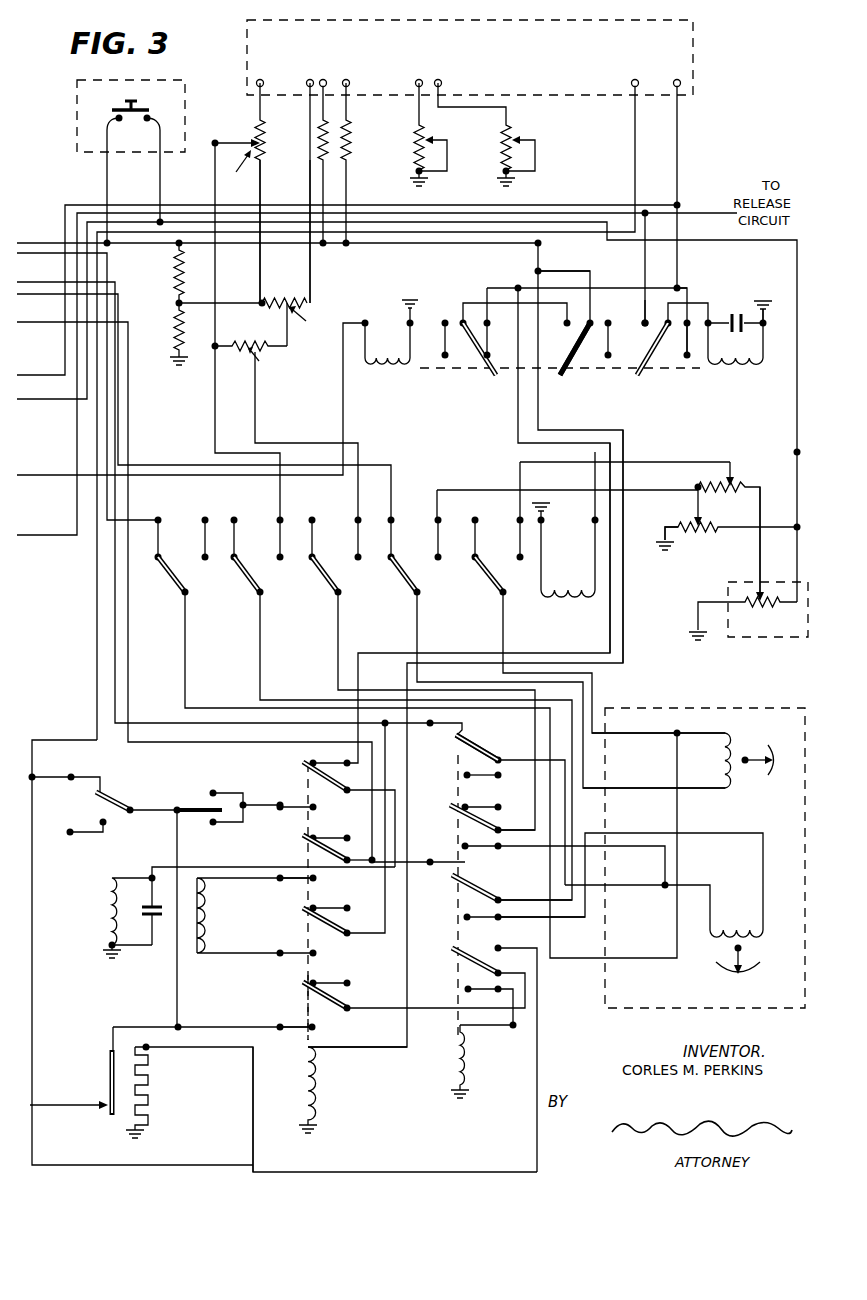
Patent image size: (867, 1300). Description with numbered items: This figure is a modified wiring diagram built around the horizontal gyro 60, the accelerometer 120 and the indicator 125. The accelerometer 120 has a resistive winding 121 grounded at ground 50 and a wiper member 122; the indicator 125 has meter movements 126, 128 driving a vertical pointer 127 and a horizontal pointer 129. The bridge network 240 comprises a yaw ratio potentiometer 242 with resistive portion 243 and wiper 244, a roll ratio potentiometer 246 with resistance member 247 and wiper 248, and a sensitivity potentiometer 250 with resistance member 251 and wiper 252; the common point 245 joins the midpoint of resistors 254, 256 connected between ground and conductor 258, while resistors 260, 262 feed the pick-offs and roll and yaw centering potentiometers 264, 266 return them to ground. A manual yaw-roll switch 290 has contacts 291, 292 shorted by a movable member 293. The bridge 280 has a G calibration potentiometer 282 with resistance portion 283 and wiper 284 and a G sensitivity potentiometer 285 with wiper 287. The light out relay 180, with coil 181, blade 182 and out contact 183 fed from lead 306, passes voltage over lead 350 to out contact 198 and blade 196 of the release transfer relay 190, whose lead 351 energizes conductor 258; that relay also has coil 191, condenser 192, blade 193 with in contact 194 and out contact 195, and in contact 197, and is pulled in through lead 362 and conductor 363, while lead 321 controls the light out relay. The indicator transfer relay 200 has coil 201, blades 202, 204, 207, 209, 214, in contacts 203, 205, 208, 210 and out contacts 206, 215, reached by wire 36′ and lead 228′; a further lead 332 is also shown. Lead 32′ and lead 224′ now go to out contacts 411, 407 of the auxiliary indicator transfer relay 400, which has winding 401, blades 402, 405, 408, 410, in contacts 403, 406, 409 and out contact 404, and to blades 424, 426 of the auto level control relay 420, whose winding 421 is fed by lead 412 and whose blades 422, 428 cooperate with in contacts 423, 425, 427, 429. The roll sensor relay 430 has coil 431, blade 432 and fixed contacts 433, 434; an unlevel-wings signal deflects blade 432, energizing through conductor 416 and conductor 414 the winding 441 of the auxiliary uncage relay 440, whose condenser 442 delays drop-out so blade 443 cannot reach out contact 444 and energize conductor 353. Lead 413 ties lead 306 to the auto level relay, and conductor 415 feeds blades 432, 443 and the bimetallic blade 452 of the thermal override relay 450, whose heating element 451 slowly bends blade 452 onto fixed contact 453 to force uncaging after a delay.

The horizontal gyro 60 is at (462, 63).
The manual yaw-roll switch 290 is at (113, 102).
The movable switch member 293 is at (136, 108).
The contact 292 is at (101, 179).
The contact 291 is at (163, 169).
The wiper 244 is at (252, 143).
The resistive portion 243 is at (261, 142).
The yaw ratio potentiometer 242 is at (238, 172).
The resistor 260 is at (310, 165).
The resistor 262 is at (346, 140).
The roll centering potentiometer 264 is at (436, 137).
The yaw centering potentiometer 266 is at (522, 136).
The ground 50 is at (175, 357).
The conductor 353 is at (97, 582).
The lead 306 is at (80, 205).
The lead 362 is at (130, 213).
The bridge network 240 is at (206, 194).
The conductor 258 is at (60, 243).
The wire 36′ is at (138, 518).
The lead 32′ is at (138, 724).
The lead 228′ is at (204, 407).
The lead 224′ is at (180, 743).
The lead 332 is at (409, 411).
The lead 321 is at (18, 476).
The resistor 254 is at (179, 286).
The resistor 256 is at (176, 327).
The common connection 245 is at (260, 296).
The resistance member 247 is at (310, 298).
The wiper 248 is at (286, 306).
The roll ratio potentiometer 246 is at (314, 316).
The resistance member 251 is at (250, 337).
The sensitivity adjustment potentiometer 250 is at (272, 357).
The wiper 252 is at (256, 411).
The light out relay 180 is at (410, 417).
The coil 181 is at (403, 358).
The movable contact blade 182 is at (478, 375).
The out contact 183 is at (487, 356).
The lead 350 is at (470, 299).
The lead 351 is at (572, 271).
The conductor 363 is at (698, 303).
The release transfer relay 190 is at (746, 441).
The coil 191 is at (740, 358).
The condenser 192 is at (736, 311).
The movable contact blade 193 is at (655, 375).
The in contact 194 is at (687, 358).
The out contact 195 is at (644, 331).
The movable contact blade 196 is at (579, 354).
The in contact 197 is at (608, 358).
The out contact 198 is at (562, 378).
The lead 412 is at (542, 430).
The lead 413 is at (518, 430).
The out contact 215 is at (158, 560).
The movable contact blade 214 is at (178, 582).
The movable contact blade 209 is at (246, 576).
The in contact 210 is at (280, 557).
The movable contact blade 207 is at (324, 576).
The in contact 208 is at (358, 557).
The out contact 206 is at (391, 557).
The in contact 205 is at (438, 557).
The movable contact blade 204 is at (400, 578).
The in contact 203 is at (520, 557).
The movable contact blade 202 is at (488, 578).
The coil 201 is at (543, 572).
The indicator transfer relay 200 is at (574, 642).
The bridge 280 is at (748, 557).
The wiper 287 is at (728, 473).
The G sensitivity potentiometer 285 is at (744, 485).
The wiper 284 is at (699, 506).
The G calibration potentiometer 282 is at (684, 521).
The resistance portion 283 is at (672, 531).
The wiper member 122 is at (771, 549).
The resistive winding 121 is at (752, 606).
The accelerometer 120 is at (779, 663).
The indicator 125 is at (690, 998).
The meter movement 128 is at (728, 734).
The pointer 129 is at (763, 768).
The meter movement 126 is at (742, 928).
The pointer 127 is at (742, 952).
The auxiliary indicator transfer relay 400 is at (508, 1077).
The winding 401 is at (466, 1046).
The movable switch blade 402 is at (455, 962).
The in contact 403 is at (462, 989).
The out contact 404 is at (460, 951).
The movable switch blade 405 is at (452, 876).
The in contact 406 is at (462, 917).
The out contact 407 is at (467, 881).
The movable switch blade 408 is at (452, 806).
The in contact 409 is at (462, 846).
The movable switch blade 410 is at (455, 741).
The out contact 411 is at (466, 741).
The roll sensor relay 430 is at (252, 949).
The coil 431 is at (197, 955).
The movable switch blade 428 is at (308, 766).
The in contact 429 is at (313, 807).
The movable switch blade 426 is at (316, 851).
The in contact 427 is at (313, 878).
The movable switch blade 424 is at (316, 926).
The in contact 425 is at (313, 953).
The movable switch blade 422 is at (308, 986).
The in contact 423 is at (313, 1027).
The conductor 414 is at (227, 868).
The conductor 415 is at (196, 1027).
The conductor 416 is at (248, 812).
The movable switch blade 432 is at (195, 808).
The fixed contact 433 is at (211, 790).
The fixed contact 434 is at (211, 825).
The auxiliary uncage relay 440 is at (96, 949).
The winding 441 is at (109, 883).
The condenser 442 is at (152, 928).
The movable switch blade 443 is at (117, 806).
The out contact 444 is at (100, 790).
The thermal override relay 450 is at (236, 1126).
The heating element 451 is at (149, 1119).
The bimetallic heat responsive member 452 is at (108, 1062).
The fixed contact 453 is at (69, 1094).
The auto level control relay 420 is at (386, 1117).
The winding 421 is at (301, 1085).